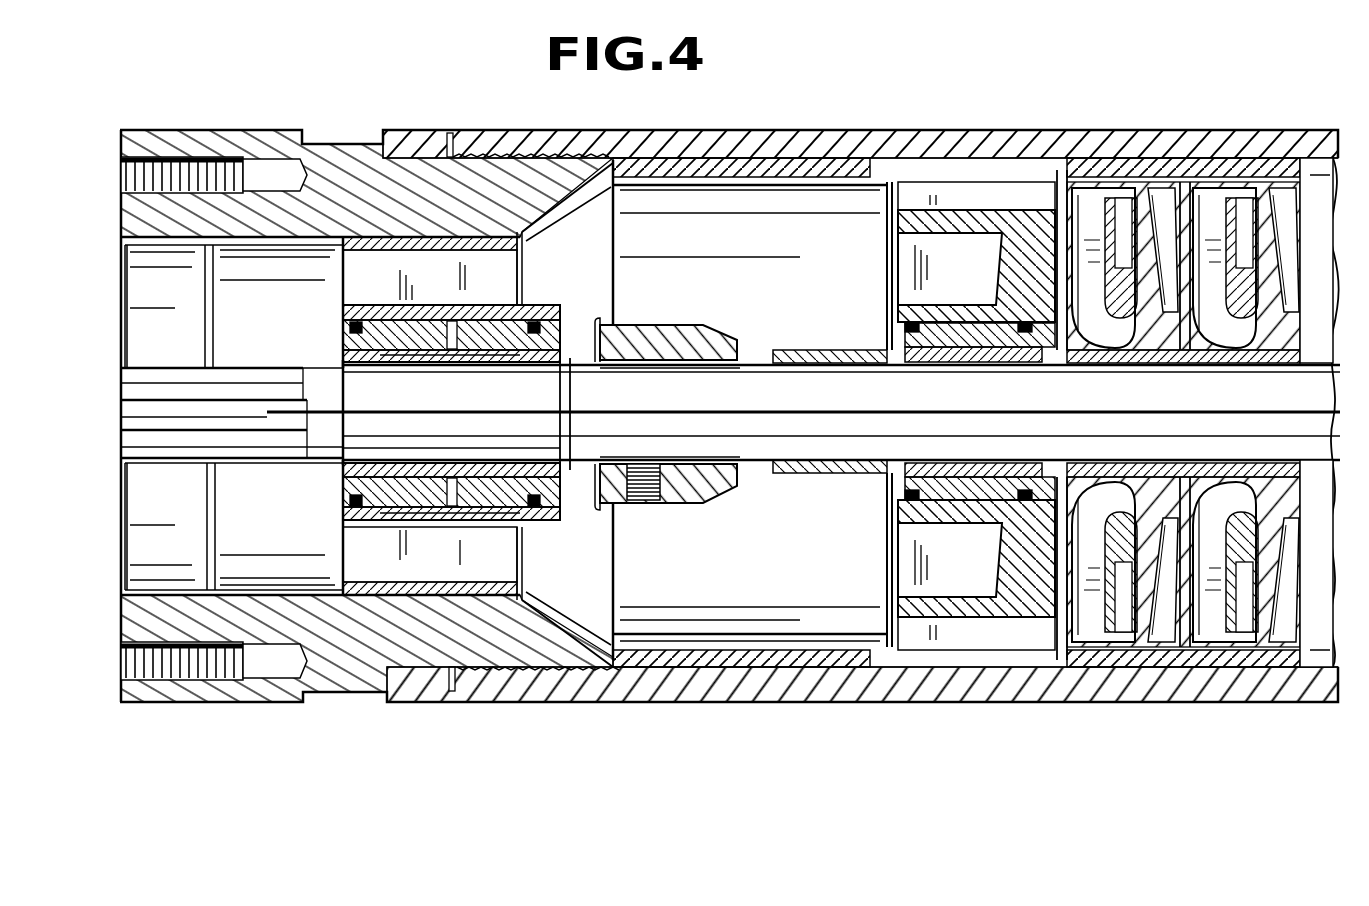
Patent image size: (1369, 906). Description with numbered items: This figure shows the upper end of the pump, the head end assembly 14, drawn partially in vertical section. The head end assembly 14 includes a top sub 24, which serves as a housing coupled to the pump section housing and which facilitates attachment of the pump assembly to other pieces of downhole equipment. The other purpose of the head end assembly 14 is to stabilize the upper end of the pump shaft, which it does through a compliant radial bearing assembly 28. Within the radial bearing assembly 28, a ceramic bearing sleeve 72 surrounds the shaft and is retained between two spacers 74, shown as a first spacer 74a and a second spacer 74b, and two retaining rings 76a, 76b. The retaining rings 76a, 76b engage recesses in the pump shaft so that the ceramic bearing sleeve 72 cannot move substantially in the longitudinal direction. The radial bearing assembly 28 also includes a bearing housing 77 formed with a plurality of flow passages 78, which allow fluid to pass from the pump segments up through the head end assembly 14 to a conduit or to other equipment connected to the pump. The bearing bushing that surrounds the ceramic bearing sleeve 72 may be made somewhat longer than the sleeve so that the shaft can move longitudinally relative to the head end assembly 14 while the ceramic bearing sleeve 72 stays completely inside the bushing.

The head end assembly 14 is at (474, 708).
The top sub 24 is at (312, 703).
The radial bearing assembly 28 is at (580, 470).
The ceramic bearing sleeve 72 is at (612, 507).
The spacers 74 is at (450, 565).
The spacer 74a is at (362, 508).
The spacer 74b is at (612, 560).
The retaining ring 76a is at (352, 507).
The retaining ring 76b is at (566, 355).
The bearing housing 77 is at (551, 547).
The flow passages 78 is at (525, 575).